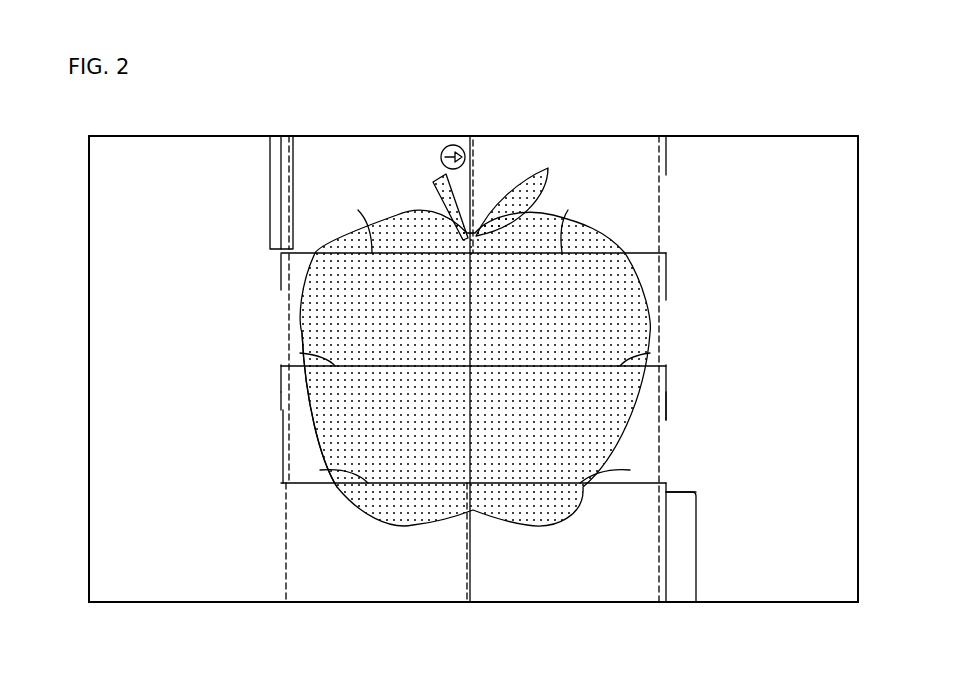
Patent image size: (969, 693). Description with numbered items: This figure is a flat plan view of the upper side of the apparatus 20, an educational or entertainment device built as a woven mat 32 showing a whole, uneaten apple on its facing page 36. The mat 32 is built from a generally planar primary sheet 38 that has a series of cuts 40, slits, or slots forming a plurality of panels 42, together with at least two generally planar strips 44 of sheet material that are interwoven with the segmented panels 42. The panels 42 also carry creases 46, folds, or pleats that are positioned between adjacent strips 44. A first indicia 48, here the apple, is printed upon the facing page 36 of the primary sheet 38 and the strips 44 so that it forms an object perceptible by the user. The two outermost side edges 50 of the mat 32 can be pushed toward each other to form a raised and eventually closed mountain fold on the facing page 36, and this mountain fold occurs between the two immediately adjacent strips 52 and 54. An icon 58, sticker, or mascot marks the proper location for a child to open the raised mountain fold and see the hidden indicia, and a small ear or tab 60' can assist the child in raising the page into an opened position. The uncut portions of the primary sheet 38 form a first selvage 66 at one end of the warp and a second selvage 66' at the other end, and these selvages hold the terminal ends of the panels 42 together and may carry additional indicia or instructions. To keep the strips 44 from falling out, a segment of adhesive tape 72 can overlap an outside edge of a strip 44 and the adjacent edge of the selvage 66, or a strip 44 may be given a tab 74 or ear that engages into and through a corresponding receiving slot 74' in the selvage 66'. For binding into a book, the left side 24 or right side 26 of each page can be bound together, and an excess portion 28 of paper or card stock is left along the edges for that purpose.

The apparatus 20 is at (658, 102).
The left side 24 is at (108, 316).
The right side 26 is at (838, 316).
The excess portion 28 is at (108, 393).
The woven mat 32 is at (395, 595).
The facing page 36 is at (422, 152).
The primary sheet 38 is at (838, 210).
The cuts 40 is at (365, 237).
The panels 42 is at (473, 351).
The strips 44 is at (287, 428).
The creases 46 is at (476, 578).
The first indicia 48 is at (320, 318).
The outermost side edges 50 is at (265, 407).
The strip 52 is at (330, 147).
The strip 54 is at (660, 292).
The icon 58 is at (452, 144).
The tab 60' is at (319, 410).
The first selvage 66 is at (187, 618).
The second selvage 66' is at (777, 624).
The adhesive tape 72 is at (280, 196).
The tab 74 is at (712, 547).
The receiving slot 74' is at (728, 495).